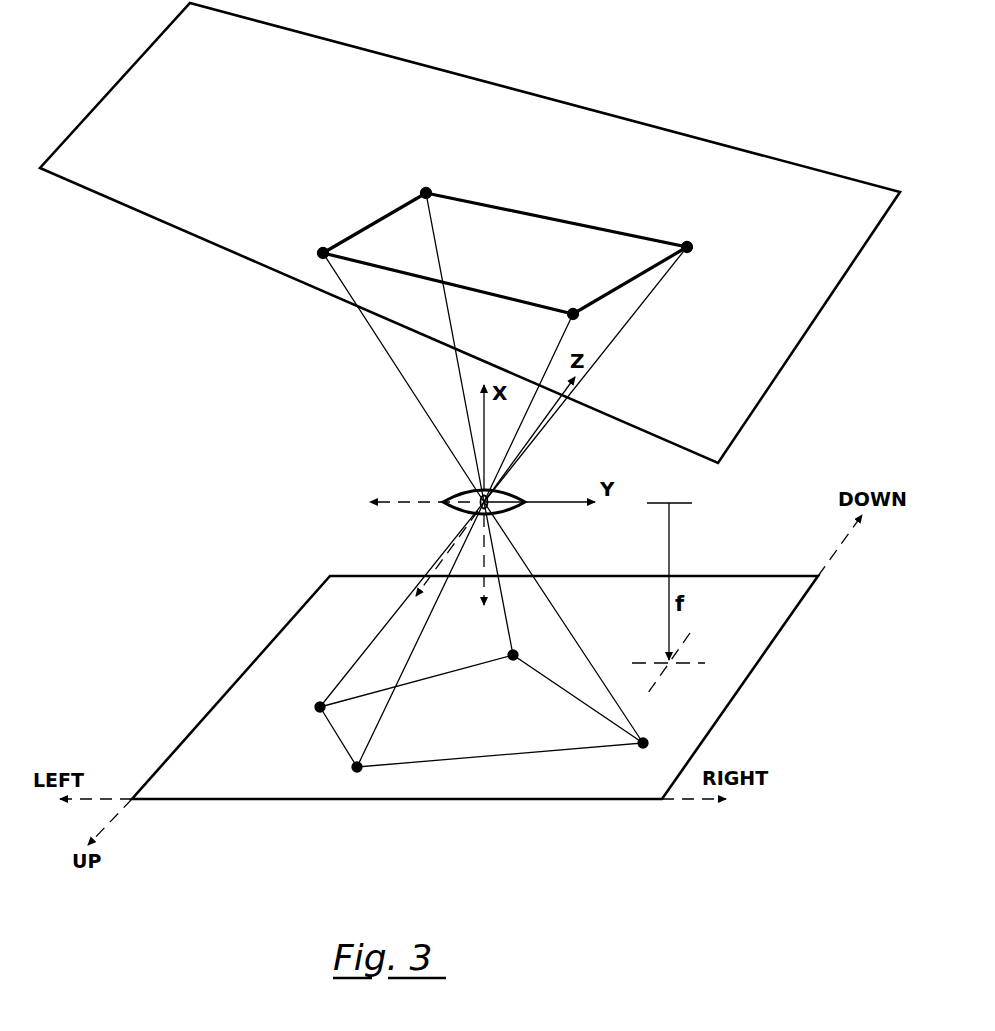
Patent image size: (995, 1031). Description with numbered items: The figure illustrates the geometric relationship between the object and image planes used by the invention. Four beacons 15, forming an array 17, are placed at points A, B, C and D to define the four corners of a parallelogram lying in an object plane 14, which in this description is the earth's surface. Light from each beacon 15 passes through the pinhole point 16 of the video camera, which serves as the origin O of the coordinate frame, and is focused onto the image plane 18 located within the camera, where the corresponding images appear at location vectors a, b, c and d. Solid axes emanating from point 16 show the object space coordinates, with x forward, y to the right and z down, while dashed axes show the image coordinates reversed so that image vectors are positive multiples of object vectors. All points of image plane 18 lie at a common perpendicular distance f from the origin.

The object plane 14 is at (835, 289).
The beacons 15 is at (433, 189).
The pinhole point 16 is at (509, 494).
The array 17 is at (389, 213).
The image plane 18 is at (738, 694).